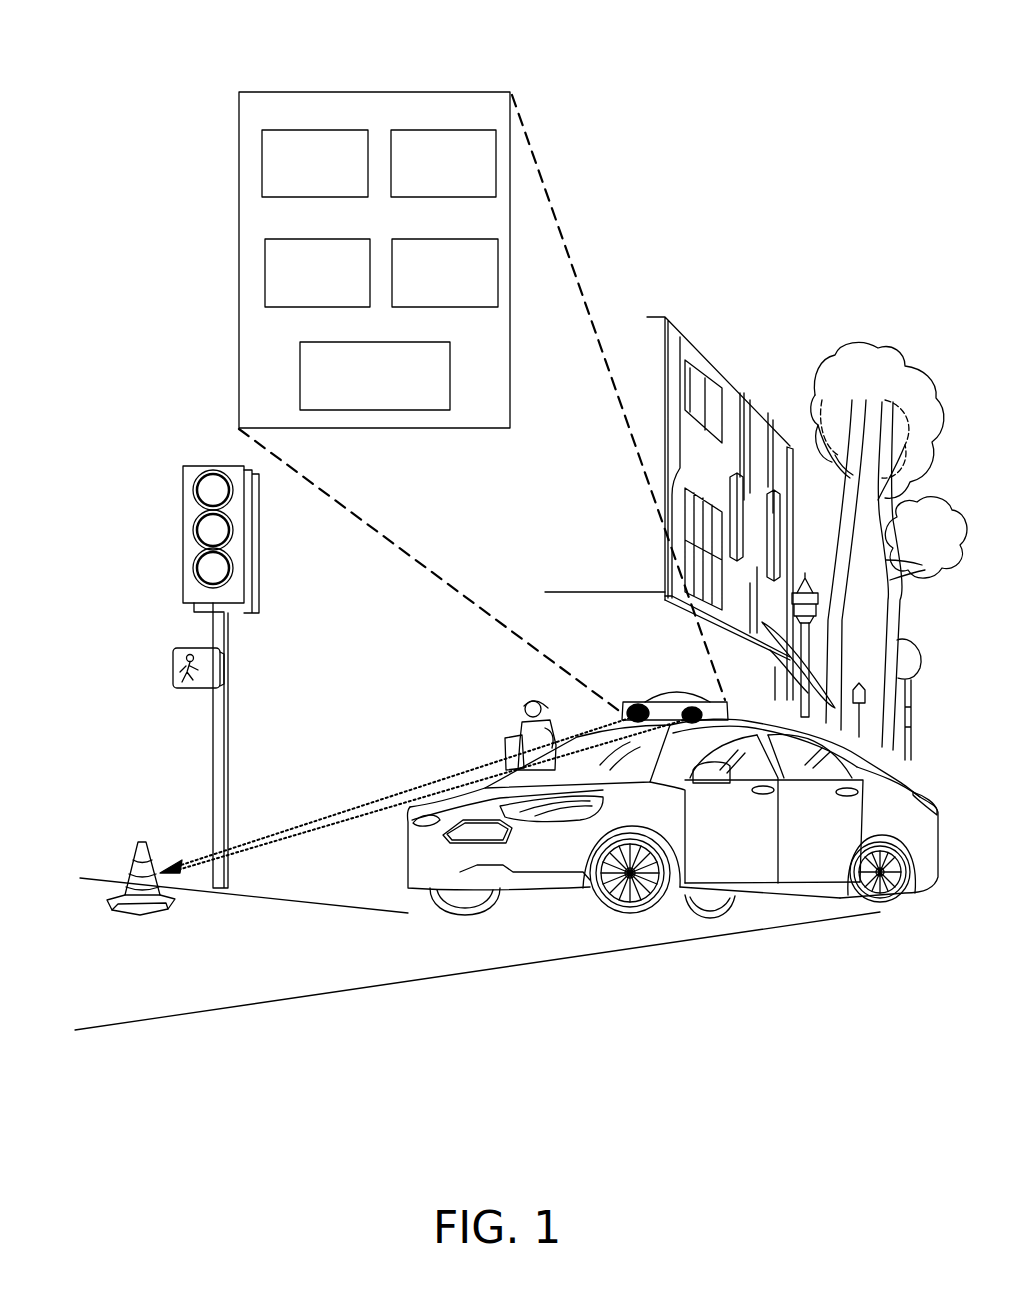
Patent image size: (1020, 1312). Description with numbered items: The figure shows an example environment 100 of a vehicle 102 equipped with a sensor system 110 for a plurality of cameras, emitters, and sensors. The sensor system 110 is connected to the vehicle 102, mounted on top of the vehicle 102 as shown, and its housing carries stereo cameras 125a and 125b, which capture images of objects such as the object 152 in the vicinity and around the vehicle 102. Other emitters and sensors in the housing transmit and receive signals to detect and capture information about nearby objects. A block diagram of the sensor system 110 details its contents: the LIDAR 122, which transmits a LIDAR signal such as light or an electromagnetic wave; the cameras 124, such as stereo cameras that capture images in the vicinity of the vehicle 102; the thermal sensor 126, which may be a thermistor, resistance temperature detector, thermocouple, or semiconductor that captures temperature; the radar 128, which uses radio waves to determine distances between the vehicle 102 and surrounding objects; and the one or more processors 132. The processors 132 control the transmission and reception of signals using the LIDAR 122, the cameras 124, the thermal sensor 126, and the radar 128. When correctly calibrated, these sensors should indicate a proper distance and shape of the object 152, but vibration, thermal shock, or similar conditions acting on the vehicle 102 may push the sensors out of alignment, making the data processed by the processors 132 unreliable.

The environment 100 is at (855, 31).
The vehicle 102 is at (410, 840).
The sensor system 110 is at (462, 92).
The LIDAR 122 is at (445, 130).
The cameras 124 is at (297, 130).
The stereo camera 125a is at (636, 704).
The stereo camera 125b is at (700, 708).
The thermal sensor 126 is at (311, 239).
The radar 128 is at (447, 239).
The processors 132 is at (386, 342).
The object 152 is at (130, 920).